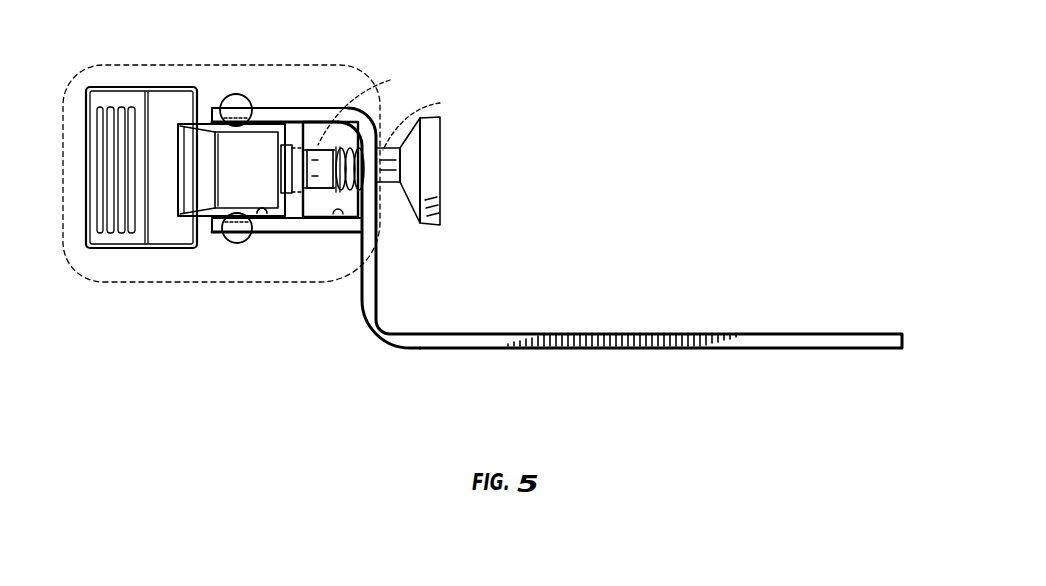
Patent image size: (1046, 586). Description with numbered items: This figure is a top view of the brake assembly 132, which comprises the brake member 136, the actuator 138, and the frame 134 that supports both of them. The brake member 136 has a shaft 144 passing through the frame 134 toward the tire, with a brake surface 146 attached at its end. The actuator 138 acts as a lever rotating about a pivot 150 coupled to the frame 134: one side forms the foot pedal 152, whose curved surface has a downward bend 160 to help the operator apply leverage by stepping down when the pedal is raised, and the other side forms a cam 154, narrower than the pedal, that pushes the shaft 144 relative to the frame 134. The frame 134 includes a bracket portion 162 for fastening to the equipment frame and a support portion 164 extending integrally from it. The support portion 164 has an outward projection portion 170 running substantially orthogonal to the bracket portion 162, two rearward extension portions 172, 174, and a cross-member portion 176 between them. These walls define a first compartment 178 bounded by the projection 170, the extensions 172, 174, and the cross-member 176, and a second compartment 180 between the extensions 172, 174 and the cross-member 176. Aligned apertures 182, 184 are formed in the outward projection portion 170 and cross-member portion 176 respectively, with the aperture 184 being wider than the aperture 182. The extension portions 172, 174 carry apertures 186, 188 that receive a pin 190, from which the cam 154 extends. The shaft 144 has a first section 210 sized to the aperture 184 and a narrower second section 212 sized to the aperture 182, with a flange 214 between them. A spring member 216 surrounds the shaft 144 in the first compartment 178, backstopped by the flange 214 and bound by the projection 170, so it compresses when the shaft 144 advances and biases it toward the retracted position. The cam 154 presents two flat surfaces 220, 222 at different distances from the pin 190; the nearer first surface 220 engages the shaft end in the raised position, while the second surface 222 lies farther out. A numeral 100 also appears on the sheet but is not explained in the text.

The mounting system 100 is at (740, 4).
The brake assembly 132 is at (255, 290).
The frame 134 is at (380, 338).
The brake member 136 is at (433, 178).
The actuator 138 is at (167, 227).
The shaft 144 is at (318, 165).
The brake surface 146 is at (447, 210).
The pivot 150 is at (245, 88).
The foot pedal 152 is at (108, 166).
The cam 154 is at (264, 147).
The downward bend 160 is at (143, 107).
The bracket portion 162 is at (730, 338).
The support portion 164 is at (103, 282).
The outward projection portion 170 is at (368, 250).
The first rearward extension portion 172 is at (311, 222).
The second rearward extension portion 174 is at (336, 114).
The cross-member portion 176 is at (298, 200).
The first compartment 178 is at (340, 215).
The second compartment 180 is at (266, 214).
The aperture in outward projection portion 182 is at (378, 92).
The aperture in cross-member portion 184 is at (440, 103).
The aperture in first rearward extension portion 186 is at (223, 225).
The aperture in second rearward extension portion 188 is at (230, 96).
The pin 190 is at (260, 117).
The first section of shaft 210 is at (400, 158).
The second section of shaft 212 is at (321, 190).
The flange 214 is at (340, 198).
The spring member 216 is at (352, 152).
The first surface of cam 220 is at (231, 170).
The second surface of cam 222 is at (288, 146).